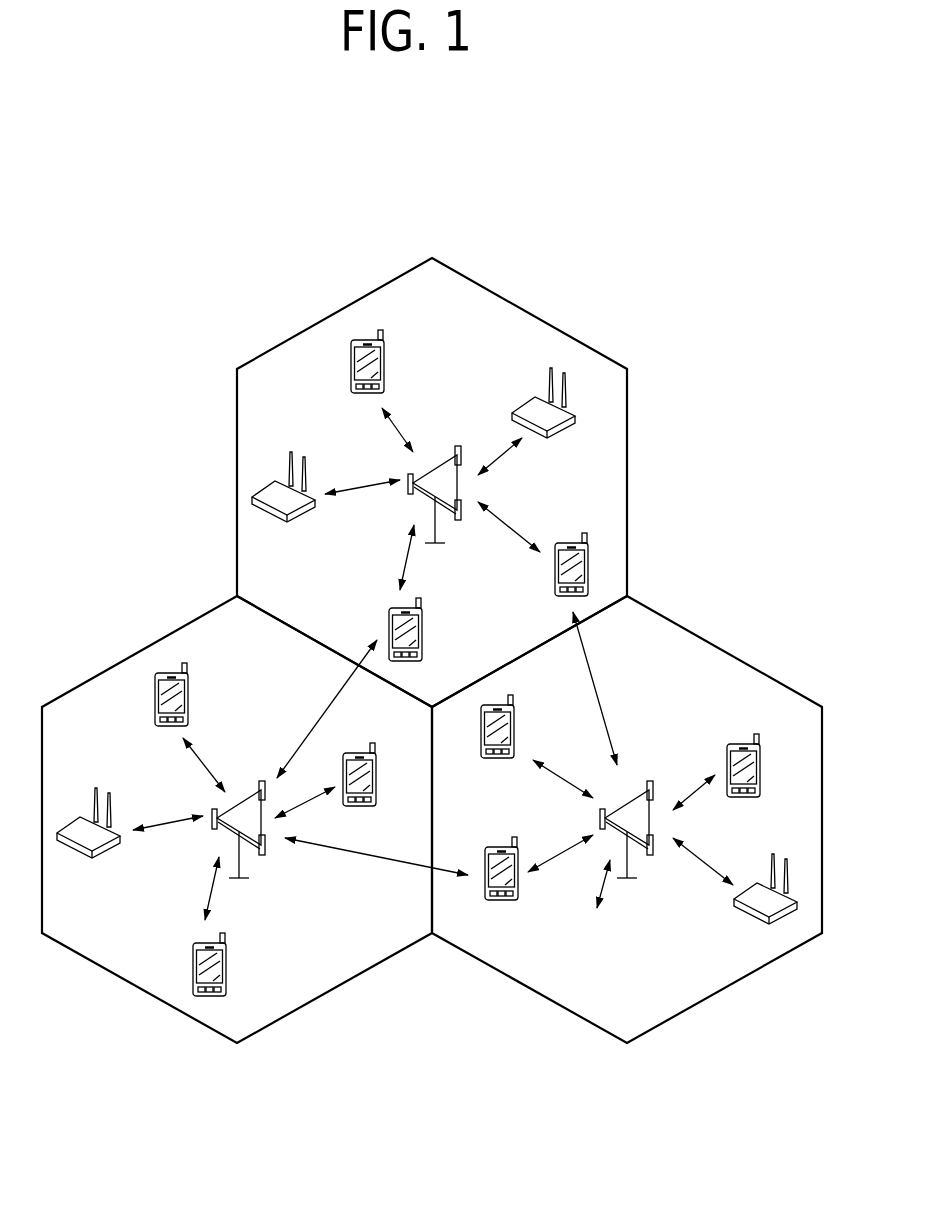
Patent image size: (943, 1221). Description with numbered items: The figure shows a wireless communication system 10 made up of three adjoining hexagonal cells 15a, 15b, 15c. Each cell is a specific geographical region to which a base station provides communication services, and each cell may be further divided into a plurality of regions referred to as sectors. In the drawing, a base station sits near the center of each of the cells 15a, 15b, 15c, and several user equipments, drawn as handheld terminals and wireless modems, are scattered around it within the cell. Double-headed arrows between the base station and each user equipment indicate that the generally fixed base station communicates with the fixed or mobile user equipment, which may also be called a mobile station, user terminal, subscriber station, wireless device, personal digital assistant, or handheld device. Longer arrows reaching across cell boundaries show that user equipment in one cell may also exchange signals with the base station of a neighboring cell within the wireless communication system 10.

The wireless communication system 10 is at (432, 650).
The cell 15a is at (626, 472).
The cell 15b is at (745, 665).
The cell 15c is at (116, 662).